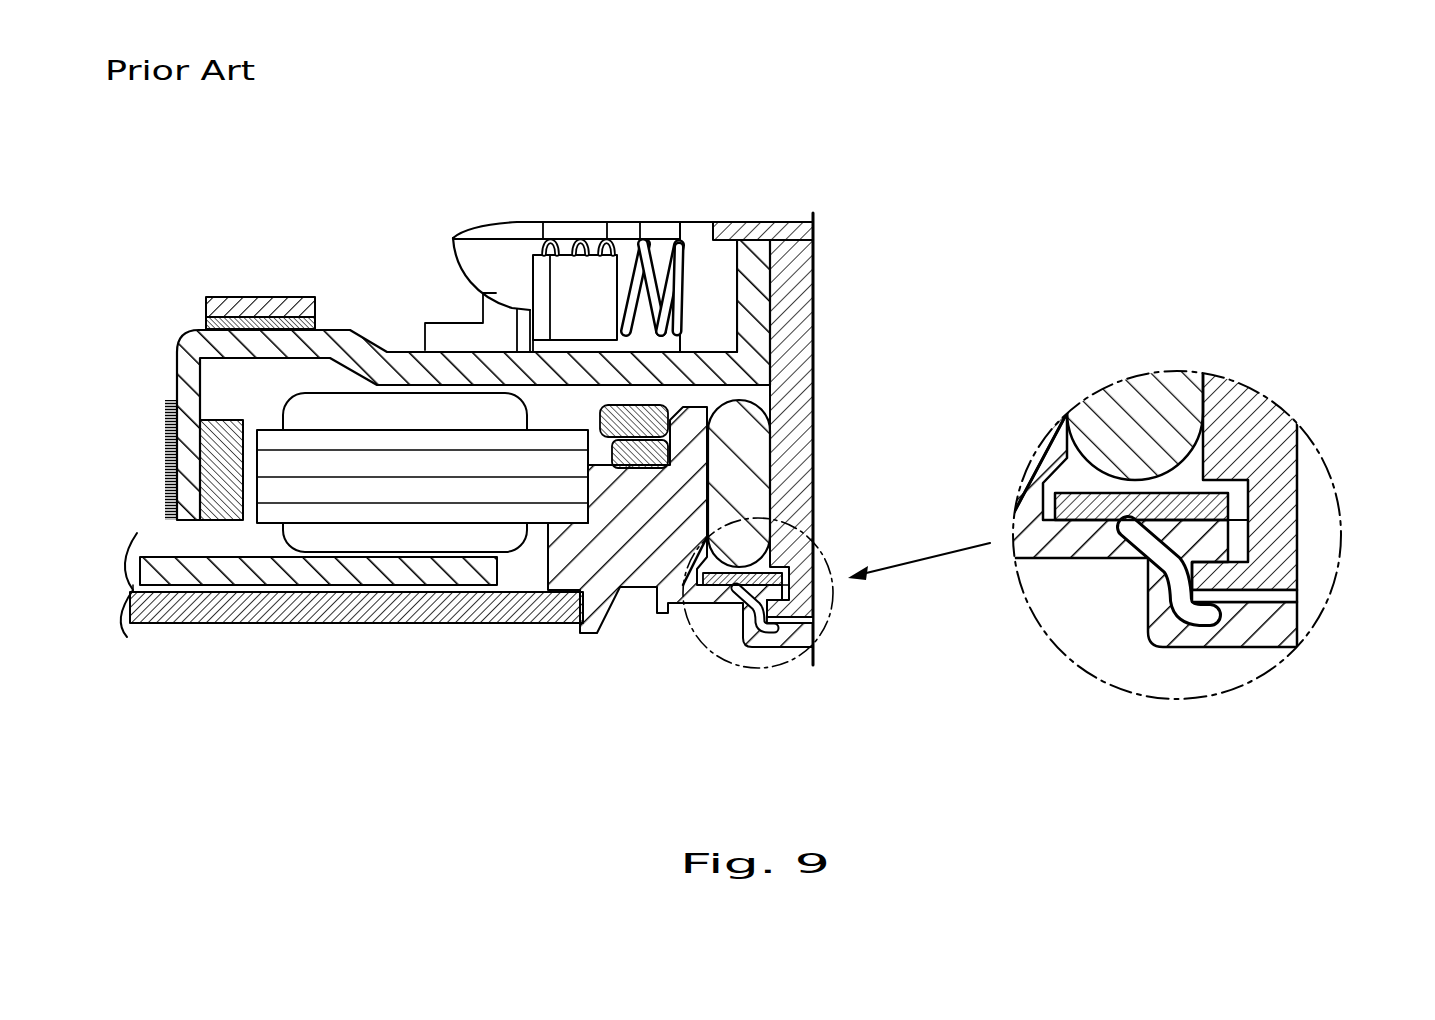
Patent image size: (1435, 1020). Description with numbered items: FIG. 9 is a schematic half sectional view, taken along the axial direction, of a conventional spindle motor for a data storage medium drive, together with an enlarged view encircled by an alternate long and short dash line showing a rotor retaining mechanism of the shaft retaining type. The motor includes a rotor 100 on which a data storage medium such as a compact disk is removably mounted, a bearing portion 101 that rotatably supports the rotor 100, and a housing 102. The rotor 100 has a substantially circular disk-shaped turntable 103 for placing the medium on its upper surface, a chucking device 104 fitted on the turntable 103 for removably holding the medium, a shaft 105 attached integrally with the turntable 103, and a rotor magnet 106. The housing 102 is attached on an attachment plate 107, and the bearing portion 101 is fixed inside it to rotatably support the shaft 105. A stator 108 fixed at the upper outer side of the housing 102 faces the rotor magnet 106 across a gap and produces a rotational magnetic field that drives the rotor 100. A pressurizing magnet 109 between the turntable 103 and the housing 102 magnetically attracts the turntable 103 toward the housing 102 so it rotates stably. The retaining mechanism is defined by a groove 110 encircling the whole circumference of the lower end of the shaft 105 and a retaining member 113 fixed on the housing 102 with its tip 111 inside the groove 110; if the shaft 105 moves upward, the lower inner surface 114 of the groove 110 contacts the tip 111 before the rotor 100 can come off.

The rotor 100 is at (424, 296).
The bearing portion 101 is at (755, 455).
The housing 102 is at (640, 567).
The turntable 103 is at (197, 347).
The chucking device 104 is at (695, 235).
The shaft 105 is at (803, 297).
The rotor magnet 106 is at (193, 460).
The attachment plate 107 is at (292, 614).
The stator 108 is at (337, 410).
The pressurizing magnet 109 is at (655, 398).
The groove 110 is at (787, 592).
The tip 111 is at (788, 576).
The retaining member 113 is at (722, 575).
The lower inner surface 114 is at (1232, 560).